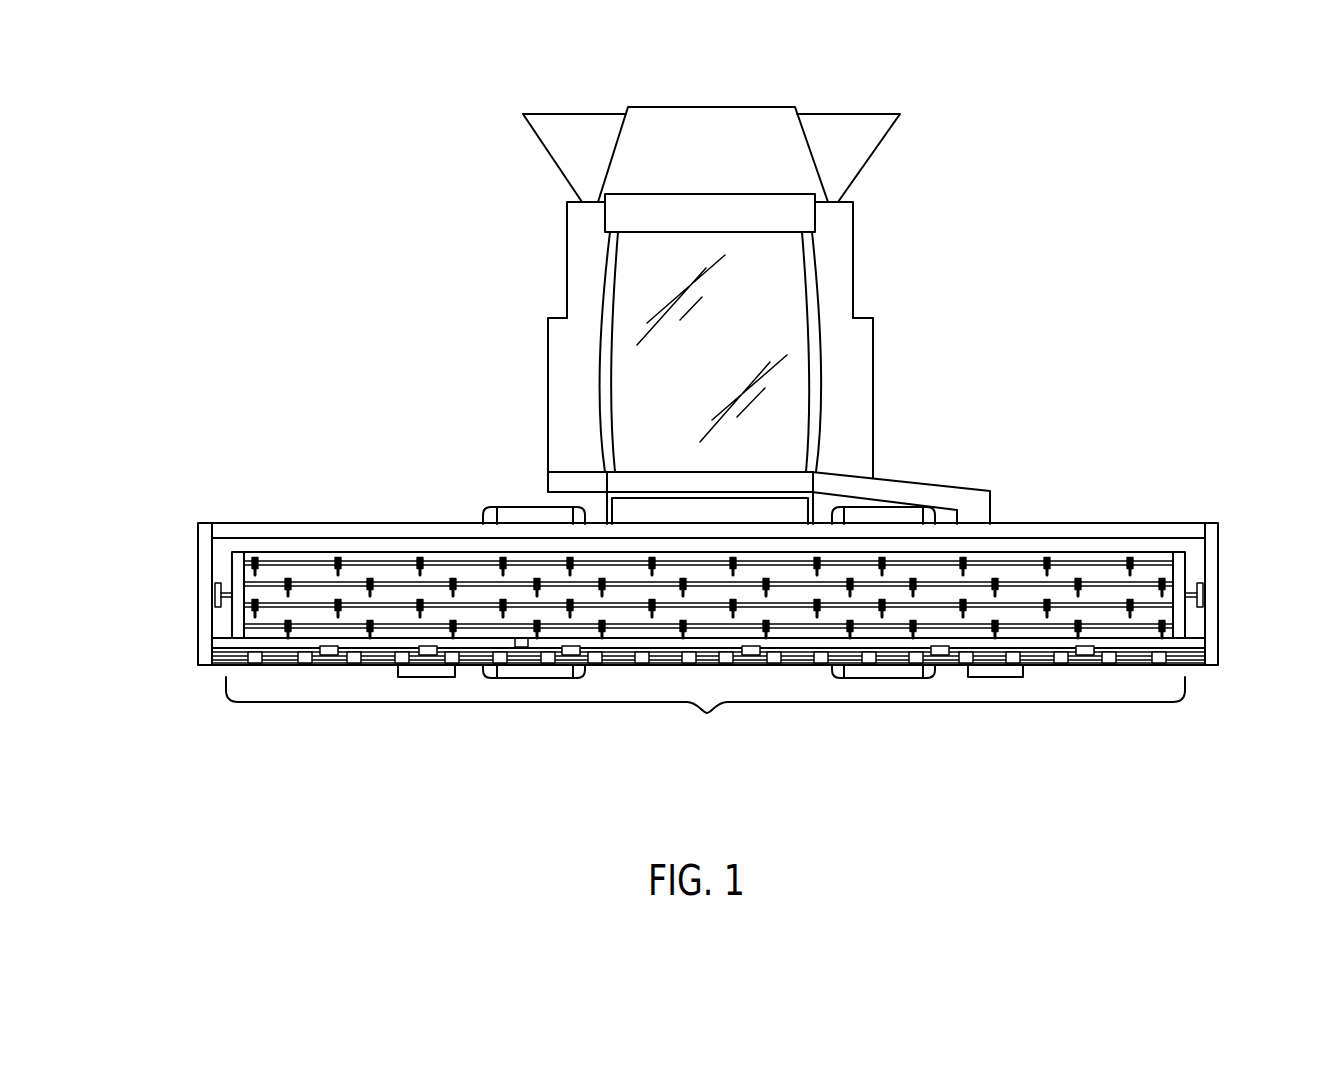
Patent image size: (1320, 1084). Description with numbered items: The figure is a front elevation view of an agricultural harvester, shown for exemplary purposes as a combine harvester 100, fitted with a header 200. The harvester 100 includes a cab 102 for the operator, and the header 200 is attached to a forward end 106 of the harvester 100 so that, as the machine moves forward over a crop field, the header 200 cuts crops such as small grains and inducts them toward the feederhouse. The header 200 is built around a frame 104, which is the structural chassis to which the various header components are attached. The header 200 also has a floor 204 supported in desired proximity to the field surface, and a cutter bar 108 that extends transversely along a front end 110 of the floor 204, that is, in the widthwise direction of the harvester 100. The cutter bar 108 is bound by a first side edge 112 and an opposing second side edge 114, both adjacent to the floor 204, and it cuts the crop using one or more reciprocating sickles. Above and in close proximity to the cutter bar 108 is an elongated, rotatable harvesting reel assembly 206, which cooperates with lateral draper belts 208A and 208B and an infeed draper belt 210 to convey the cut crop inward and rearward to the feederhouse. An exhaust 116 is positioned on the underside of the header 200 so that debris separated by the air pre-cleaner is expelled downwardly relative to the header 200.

The combine harvester 100 is at (405, 208).
The cab 102 is at (862, 248).
The frame 104 is at (1050, 522).
The forward end 106 is at (768, 510).
The cutter bar 108 is at (705, 711).
The front end 110 is at (793, 660).
The first side edge 112 is at (1218, 563).
The second side edge 114 is at (198, 575).
The exhaust 116 is at (428, 677).
The header 200 is at (1242, 455).
The floor 204 is at (890, 650).
The harvesting reel assembly 206 is at (377, 560).
The lateral draper belt 208A is at (1040, 643).
The lateral draper belt 208B is at (282, 643).
The infeed draper belt 210 is at (618, 643).